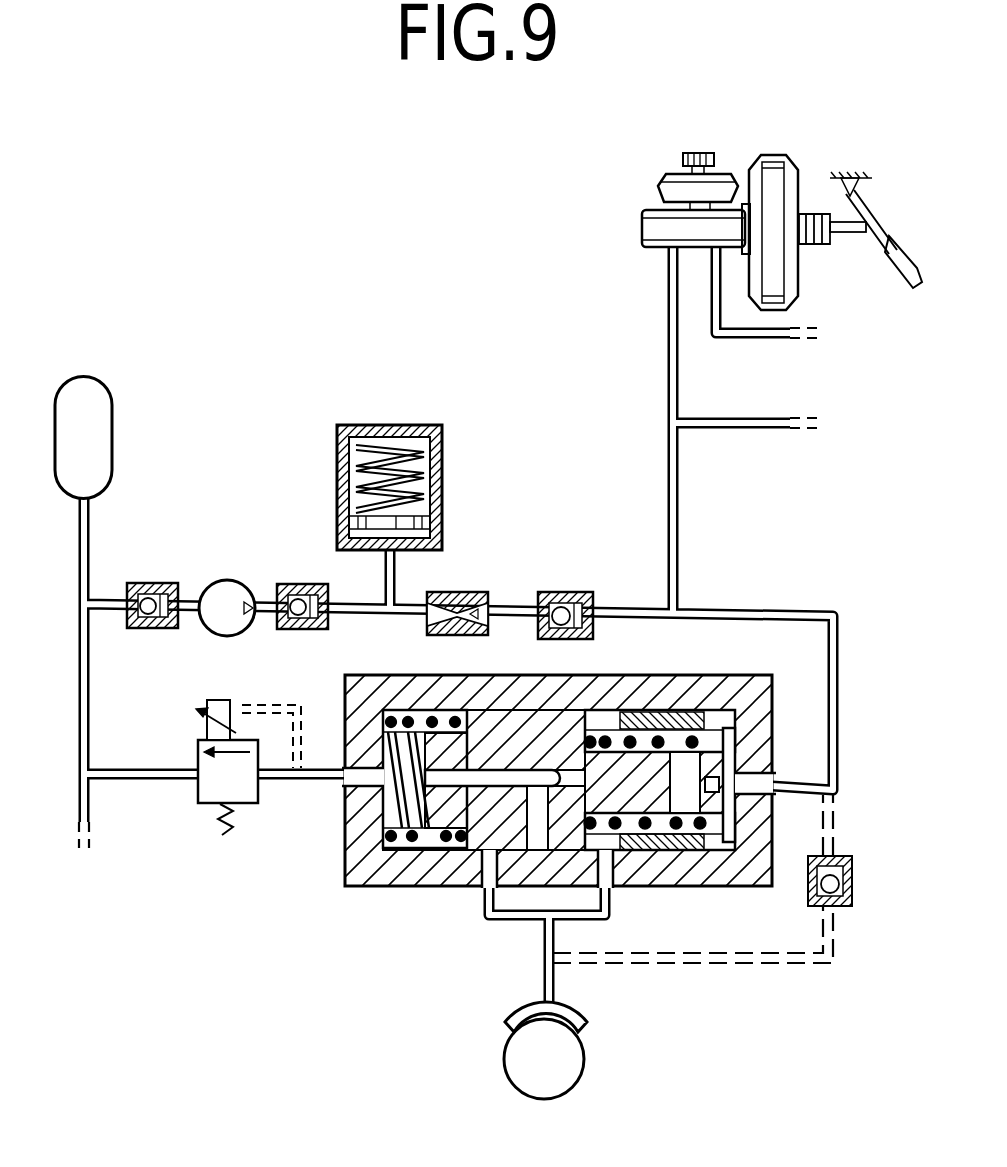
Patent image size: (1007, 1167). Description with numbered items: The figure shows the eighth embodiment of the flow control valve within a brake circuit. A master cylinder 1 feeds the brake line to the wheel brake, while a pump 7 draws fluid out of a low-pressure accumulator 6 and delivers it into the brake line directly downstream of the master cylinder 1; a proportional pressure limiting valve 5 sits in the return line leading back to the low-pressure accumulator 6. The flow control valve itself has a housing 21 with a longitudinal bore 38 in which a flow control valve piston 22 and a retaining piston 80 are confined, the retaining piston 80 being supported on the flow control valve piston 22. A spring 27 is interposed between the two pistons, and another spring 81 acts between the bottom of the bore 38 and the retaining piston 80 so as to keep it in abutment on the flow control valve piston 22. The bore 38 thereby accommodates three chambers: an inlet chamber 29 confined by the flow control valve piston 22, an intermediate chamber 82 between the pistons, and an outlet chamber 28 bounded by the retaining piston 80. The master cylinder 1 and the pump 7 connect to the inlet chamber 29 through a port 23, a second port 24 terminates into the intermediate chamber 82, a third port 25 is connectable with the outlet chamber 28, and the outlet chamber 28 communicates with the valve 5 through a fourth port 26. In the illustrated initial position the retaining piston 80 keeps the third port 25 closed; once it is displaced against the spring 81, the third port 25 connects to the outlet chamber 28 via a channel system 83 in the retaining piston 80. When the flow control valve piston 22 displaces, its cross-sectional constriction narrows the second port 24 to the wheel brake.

The master cylinder 1 is at (627, 212).
The proportional pressure limiting valve 5 is at (240, 806).
The low-pressure accumulator 6 is at (97, 406).
The pump 7 is at (224, 590).
The housing 21 is at (765, 688).
The flow control valve piston 22 is at (690, 806).
The port 23 is at (768, 792).
The second port 24 is at (607, 874).
The third port 25 is at (484, 866).
The fourth port 26 is at (346, 770).
The spring 27 is at (656, 832).
The outlet chamber 28 is at (394, 802).
The inlet chamber 29 is at (740, 842).
The longitudinal bore 38 is at (362, 882).
The retaining piston 80 is at (481, 812).
The spring 81 is at (404, 852).
The intermediate chamber 82 is at (604, 740).
The channel system 83 is at (495, 786).